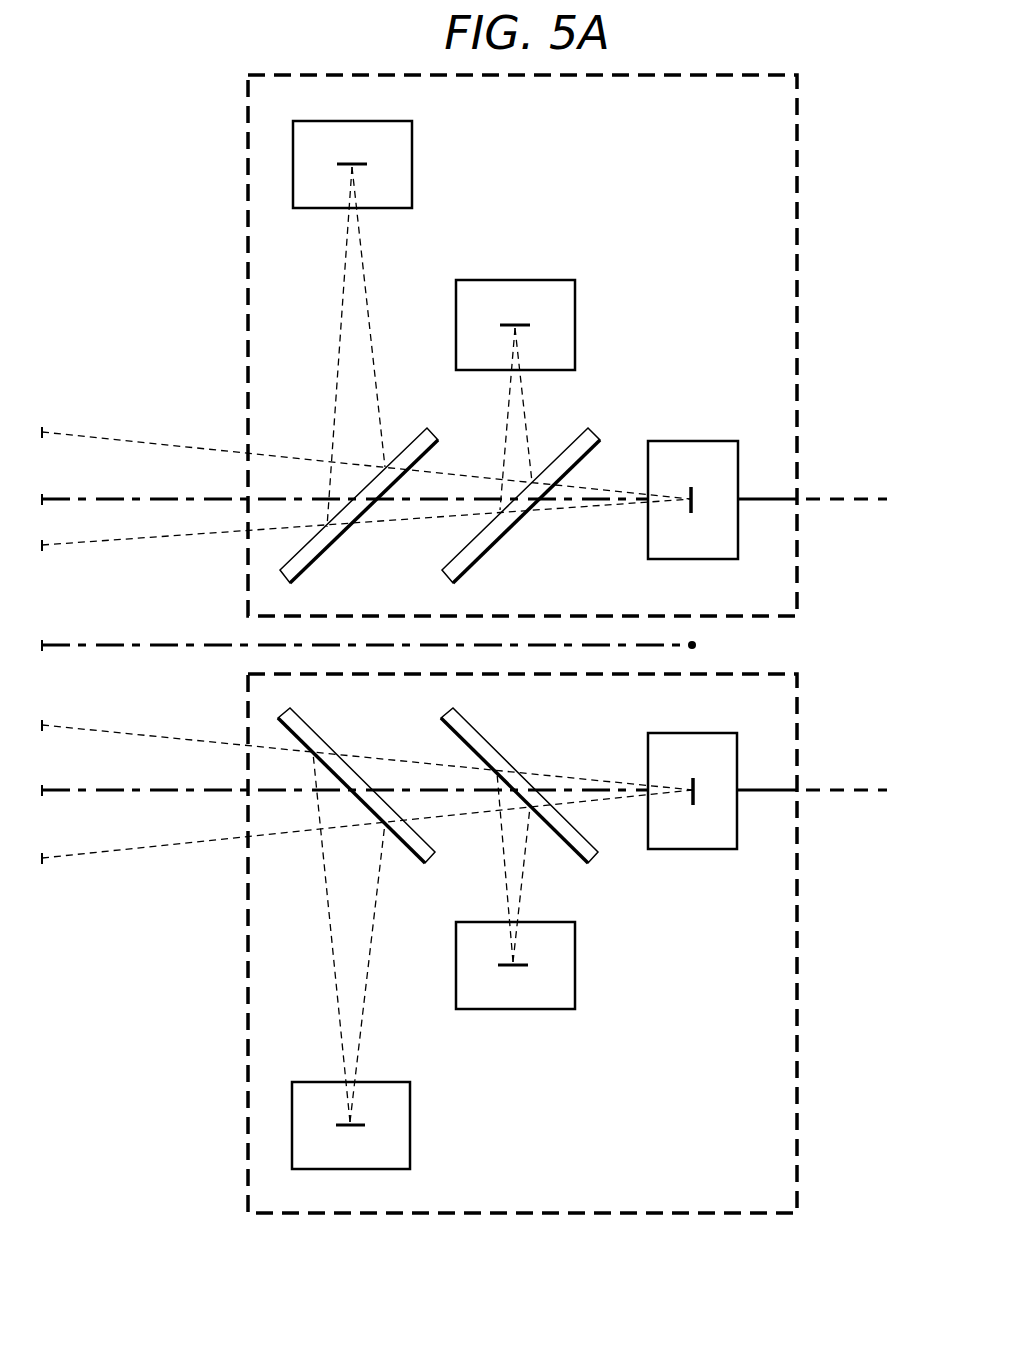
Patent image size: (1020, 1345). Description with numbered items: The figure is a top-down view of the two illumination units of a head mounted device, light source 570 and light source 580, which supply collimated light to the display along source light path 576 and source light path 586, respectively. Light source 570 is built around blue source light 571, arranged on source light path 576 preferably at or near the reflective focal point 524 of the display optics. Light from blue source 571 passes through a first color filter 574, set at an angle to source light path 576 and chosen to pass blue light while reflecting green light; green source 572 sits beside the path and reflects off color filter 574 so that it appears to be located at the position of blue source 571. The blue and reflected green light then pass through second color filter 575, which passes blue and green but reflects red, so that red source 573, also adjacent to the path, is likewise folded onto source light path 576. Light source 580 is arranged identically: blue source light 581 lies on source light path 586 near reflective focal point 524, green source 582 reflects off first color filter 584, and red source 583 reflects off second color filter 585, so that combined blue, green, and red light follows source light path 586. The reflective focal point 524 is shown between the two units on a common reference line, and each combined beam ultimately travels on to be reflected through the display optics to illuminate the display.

The light source 570 is at (797, 170).
The blue source light 571 is at (725, 441).
The green source 572 is at (556, 280).
The red source 573 is at (412, 148).
The first color filter 574 is at (594, 430).
The second color filter 575 is at (415, 430).
The source light path 576 is at (878, 497).
The reflective focal point 524 is at (700, 645).
The light source 580 is at (797, 1092).
The blue source light 581 is at (717, 849).
The green source 582 is at (542, 1009).
The red source 583 is at (410, 1140).
The first color filter 584 is at (598, 858).
The second color filter 585 is at (413, 862).
The source light path 586 is at (878, 792).